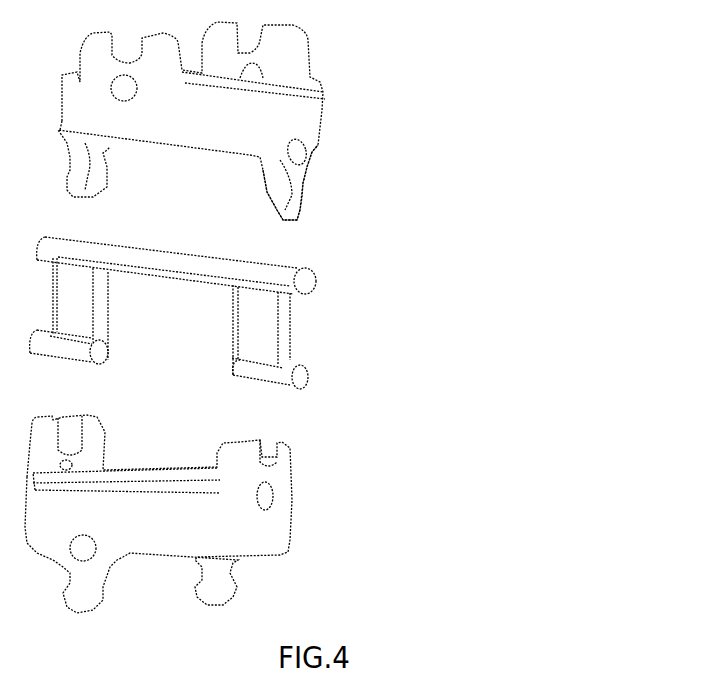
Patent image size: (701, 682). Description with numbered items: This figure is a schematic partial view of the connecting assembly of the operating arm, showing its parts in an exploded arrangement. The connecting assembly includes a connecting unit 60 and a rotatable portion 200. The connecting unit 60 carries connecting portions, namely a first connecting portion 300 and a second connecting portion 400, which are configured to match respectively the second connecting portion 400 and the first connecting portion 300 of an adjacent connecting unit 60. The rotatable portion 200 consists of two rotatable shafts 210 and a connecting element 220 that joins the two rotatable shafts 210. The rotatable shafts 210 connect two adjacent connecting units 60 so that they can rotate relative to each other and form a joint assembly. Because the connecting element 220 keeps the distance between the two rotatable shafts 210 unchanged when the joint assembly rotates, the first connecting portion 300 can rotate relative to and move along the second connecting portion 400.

The connecting unit 60 is at (283, 125).
The first connecting portion 300 is at (290, 195).
The rotatable portion 200 is at (326, 333).
The rotatable shaft 210 is at (277, 272).
The connecting element 220 is at (270, 328).
The second connecting portion 400 is at (267, 463).